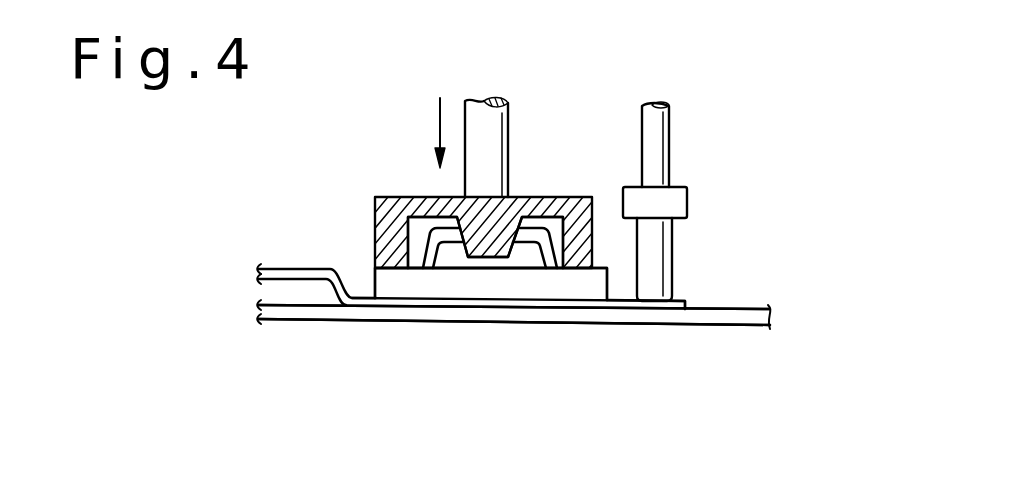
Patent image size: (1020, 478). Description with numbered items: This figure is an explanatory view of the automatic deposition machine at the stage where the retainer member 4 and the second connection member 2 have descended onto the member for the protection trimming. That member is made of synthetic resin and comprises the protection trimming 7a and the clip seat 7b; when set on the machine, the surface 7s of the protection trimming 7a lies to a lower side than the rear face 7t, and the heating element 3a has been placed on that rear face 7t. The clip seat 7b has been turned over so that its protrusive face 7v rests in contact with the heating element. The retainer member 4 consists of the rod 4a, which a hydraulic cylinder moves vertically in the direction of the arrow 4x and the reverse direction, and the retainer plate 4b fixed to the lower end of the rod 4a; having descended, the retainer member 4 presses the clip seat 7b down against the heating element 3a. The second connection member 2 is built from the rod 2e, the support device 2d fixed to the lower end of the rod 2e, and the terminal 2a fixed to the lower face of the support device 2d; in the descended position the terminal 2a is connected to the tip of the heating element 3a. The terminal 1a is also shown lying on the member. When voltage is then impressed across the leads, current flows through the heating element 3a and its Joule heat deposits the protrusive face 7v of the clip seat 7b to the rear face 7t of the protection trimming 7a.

The terminal 1a is at (296, 268).
The second connection member 2 is at (668, 100).
The terminal 2a is at (672, 258).
The support device 2d is at (688, 192).
The rod 2e is at (670, 140).
The heating element 3a is at (627, 299).
The retainer member 4 is at (375, 218).
The rod 4a is at (508, 131).
The retainer plate 4b is at (531, 212).
The arrow 4x is at (439, 123).
The protection trimming 7a is at (316, 311).
The clip seat 7b is at (428, 287).
The surface 7s is at (712, 326).
The rear face 7t is at (743, 310).
The protrusive face 7v is at (485, 288).